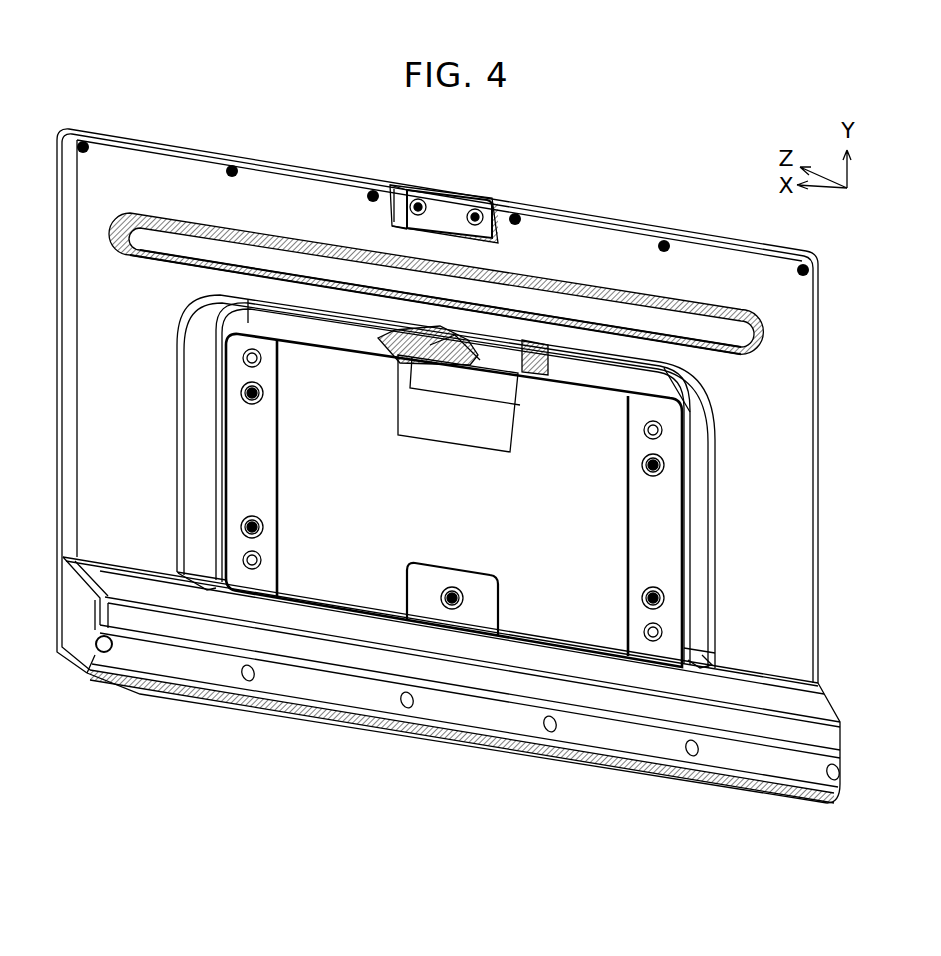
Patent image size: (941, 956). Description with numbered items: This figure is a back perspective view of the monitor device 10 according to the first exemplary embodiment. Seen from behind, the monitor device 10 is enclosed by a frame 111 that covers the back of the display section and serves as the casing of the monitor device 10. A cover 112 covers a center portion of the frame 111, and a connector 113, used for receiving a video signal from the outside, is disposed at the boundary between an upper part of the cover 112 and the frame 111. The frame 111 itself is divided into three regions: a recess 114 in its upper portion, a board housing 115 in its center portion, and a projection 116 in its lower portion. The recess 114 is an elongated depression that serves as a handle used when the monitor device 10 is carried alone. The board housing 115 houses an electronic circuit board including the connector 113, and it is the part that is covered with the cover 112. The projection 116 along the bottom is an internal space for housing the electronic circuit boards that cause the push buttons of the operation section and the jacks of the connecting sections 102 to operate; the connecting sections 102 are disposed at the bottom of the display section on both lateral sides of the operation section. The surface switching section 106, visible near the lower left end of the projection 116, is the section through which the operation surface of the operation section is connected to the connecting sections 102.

The monitor device 10 is at (571, 178).
The connecting sections 102 is at (220, 707).
The surface switching section 106 is at (130, 686).
The frame 111 is at (797, 622).
The cover 112 is at (598, 507).
The connector 113 is at (460, 352).
The recess 114 is at (583, 313).
The board housing 115 is at (698, 578).
The projection 116 is at (847, 688).